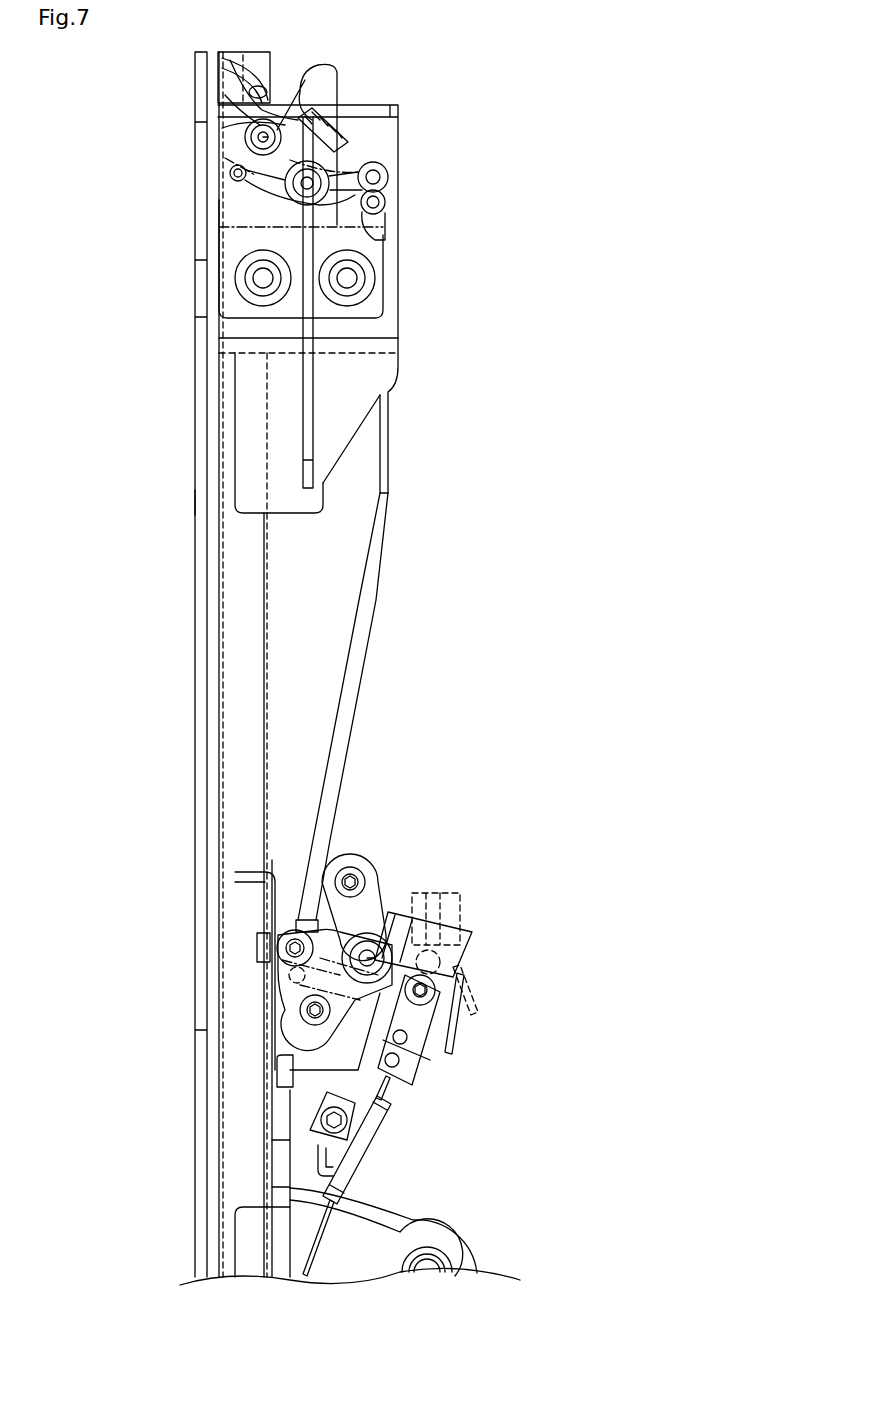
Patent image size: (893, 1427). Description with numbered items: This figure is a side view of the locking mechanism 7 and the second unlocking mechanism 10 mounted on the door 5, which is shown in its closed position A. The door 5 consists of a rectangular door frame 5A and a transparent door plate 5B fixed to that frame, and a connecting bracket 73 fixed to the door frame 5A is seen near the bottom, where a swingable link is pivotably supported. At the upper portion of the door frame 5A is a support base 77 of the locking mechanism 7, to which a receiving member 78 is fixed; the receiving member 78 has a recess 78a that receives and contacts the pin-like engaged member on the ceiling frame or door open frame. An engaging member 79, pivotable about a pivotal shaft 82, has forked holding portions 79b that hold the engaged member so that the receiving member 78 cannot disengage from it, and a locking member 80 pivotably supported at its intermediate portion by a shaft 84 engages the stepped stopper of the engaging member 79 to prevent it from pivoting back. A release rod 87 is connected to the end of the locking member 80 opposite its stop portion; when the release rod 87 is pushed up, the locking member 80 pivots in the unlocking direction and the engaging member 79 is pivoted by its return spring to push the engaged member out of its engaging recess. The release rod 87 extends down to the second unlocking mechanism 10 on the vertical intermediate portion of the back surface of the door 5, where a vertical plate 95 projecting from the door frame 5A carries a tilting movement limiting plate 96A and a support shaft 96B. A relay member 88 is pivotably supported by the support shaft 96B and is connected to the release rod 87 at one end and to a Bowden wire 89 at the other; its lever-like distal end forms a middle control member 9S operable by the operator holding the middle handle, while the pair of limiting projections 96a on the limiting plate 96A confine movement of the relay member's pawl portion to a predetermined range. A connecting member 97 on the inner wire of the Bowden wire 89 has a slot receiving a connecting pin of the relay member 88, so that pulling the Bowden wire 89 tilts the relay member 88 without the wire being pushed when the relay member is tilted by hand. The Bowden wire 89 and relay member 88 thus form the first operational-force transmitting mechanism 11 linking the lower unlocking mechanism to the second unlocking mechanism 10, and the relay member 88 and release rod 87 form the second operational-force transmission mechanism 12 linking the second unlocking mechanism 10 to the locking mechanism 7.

The door 5 is at (98, 647).
The door frame 5A is at (232, 662).
The door plate 5B is at (198, 718).
The closed position A is at (195, 503).
The locking mechanism 7 is at (388, 162).
The recess 78a is at (283, 75).
The engaging member 79 is at (215, 118).
The forked holding portions 79b is at (320, 63).
The pivotal shaft 82 is at (225, 130).
The shaft 84 is at (230, 185).
The locking member 80 is at (375, 203).
The receiving member 78 is at (233, 217).
The support base 77 is at (240, 330).
The release rod 87 is at (380, 453).
The second operational-force transmission mechanism 12 is at (387, 548).
The tilting movement limiting plate 96A is at (342, 870).
The limiting projections 96a is at (380, 935).
The support shaft 96B is at (257, 958).
The second unlocking mechanism 10 is at (468, 887).
The relay member 88 is at (453, 960).
The middle control member 9S is at (453, 1045).
The connecting member 97 is at (432, 1000).
The Bowden wire 89 is at (383, 1098).
The first operational-force transmitting mechanism 11 is at (368, 1158).
The vertical plate 95 is at (283, 1065).
The connecting bracket 73 is at (408, 1220).